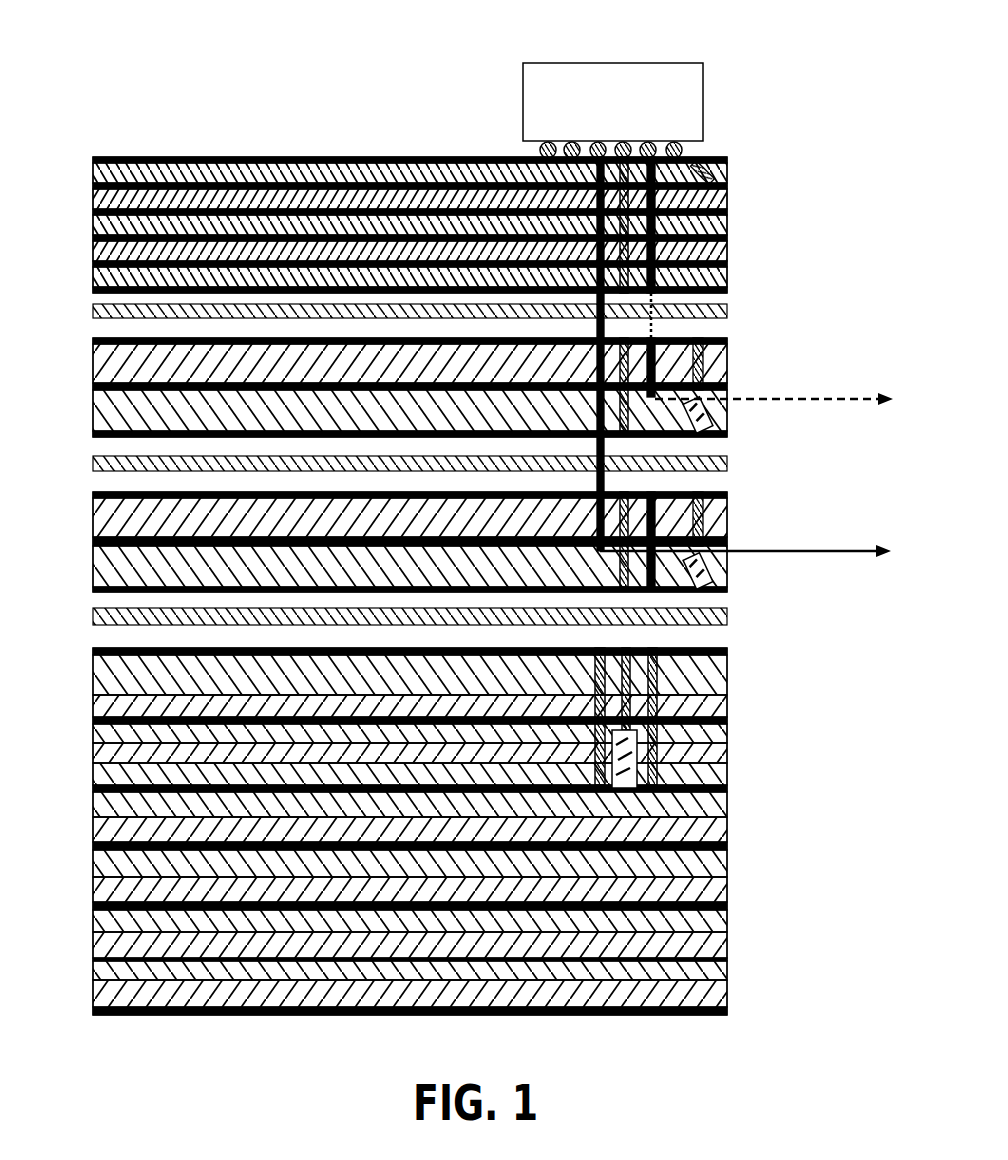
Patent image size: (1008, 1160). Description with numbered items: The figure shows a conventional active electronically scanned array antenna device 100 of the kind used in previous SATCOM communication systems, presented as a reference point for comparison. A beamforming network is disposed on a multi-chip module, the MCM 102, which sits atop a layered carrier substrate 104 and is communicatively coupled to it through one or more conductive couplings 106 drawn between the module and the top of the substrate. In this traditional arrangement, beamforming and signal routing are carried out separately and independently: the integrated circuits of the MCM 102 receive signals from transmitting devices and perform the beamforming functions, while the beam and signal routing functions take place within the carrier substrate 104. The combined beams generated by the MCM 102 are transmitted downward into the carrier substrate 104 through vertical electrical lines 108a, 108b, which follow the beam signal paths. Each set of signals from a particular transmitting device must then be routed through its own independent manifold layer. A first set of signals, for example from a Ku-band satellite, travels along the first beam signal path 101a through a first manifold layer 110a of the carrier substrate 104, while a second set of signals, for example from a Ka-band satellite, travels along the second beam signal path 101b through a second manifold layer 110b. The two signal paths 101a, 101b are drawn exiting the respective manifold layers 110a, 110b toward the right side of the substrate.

The AESA antenna device 100 is at (464, 512).
The multi-chip module 102 is at (592, 126).
The carrier substrate 104 is at (66, 220).
The conductive couplings 106 is at (512, 147).
The electrical line 108a is at (647, 190).
The electrical line 108b is at (662, 268).
The first manifold layer 110a is at (66, 387).
The second manifold layer 110b is at (66, 541).
The beam 1 signal path 101a is at (783, 401).
The beam 2 signal path 101b is at (788, 553).